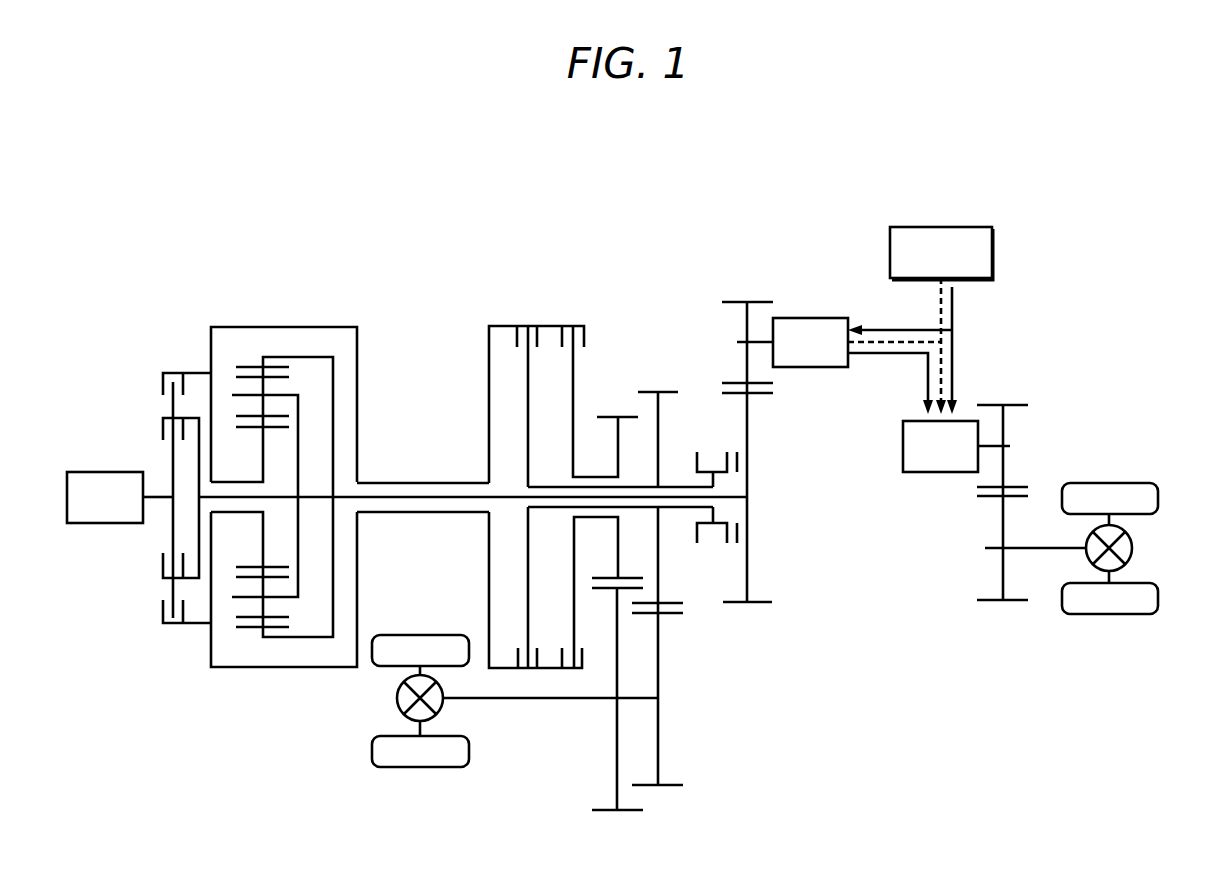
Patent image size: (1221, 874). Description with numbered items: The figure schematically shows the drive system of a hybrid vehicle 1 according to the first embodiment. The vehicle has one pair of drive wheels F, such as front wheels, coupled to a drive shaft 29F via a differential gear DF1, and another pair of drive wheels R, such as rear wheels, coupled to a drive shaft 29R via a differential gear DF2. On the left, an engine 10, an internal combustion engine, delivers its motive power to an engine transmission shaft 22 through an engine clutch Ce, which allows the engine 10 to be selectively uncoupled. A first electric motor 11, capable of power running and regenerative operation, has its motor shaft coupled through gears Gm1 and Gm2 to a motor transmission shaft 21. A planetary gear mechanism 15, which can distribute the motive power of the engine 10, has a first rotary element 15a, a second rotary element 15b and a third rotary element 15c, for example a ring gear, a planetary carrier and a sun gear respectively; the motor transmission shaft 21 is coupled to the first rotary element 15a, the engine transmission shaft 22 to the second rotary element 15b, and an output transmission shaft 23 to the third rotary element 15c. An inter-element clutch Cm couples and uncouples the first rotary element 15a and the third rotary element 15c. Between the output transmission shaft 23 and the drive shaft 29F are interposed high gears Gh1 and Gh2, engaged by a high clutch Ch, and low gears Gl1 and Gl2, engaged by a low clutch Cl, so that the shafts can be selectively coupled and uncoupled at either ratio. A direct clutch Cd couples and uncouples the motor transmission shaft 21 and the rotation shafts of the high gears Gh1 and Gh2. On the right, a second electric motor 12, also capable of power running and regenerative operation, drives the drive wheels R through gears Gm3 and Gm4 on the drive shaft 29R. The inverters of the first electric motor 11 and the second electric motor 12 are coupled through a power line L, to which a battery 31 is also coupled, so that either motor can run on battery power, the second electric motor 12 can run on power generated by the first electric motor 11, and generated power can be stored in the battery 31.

The hybrid vehicle 1 is at (868, 140).
The engine 10 is at (97, 472).
The first electric motor 11 is at (815, 318).
The second electric motor 12 is at (923, 473).
The planetary gear mechanism 15 is at (317, 472).
The first rotary element 15a is at (278, 362).
The second rotary element 15b is at (290, 394).
The third rotary element 15c is at (278, 437).
The motor transmission shaft 21 is at (433, 498).
The engine transmission shaft 22 is at (236, 497).
The output transmission shaft 23 is at (420, 483).
The drive shaft 29F is at (548, 700).
The drive shaft 29R is at (1028, 548).
The battery 31 is at (973, 226).
The inter-element clutch Cm is at (168, 496).
The engine clutch Ce is at (165, 498).
The high clutch Ch is at (536, 483).
The low clutch Cl is at (591, 483).
The direct clutch Cd is at (717, 486).
The low gear Gl1 is at (615, 415).
The low gear Gl2 is at (617, 598).
The high gear Gh1 is at (657, 390).
The high gear Gh2 is at (660, 632).
The gear Gm1 is at (733, 300).
The gear Gm2 is at (763, 393).
The gear Gm3 is at (1022, 405).
The gear Gm4 is at (987, 496).
The differential gear DF1 is at (395, 698).
The differential gear DF2 is at (1134, 547).
The drive wheels F is at (392, 635).
The drive wheels R is at (1140, 483).
The power line L is at (942, 365).